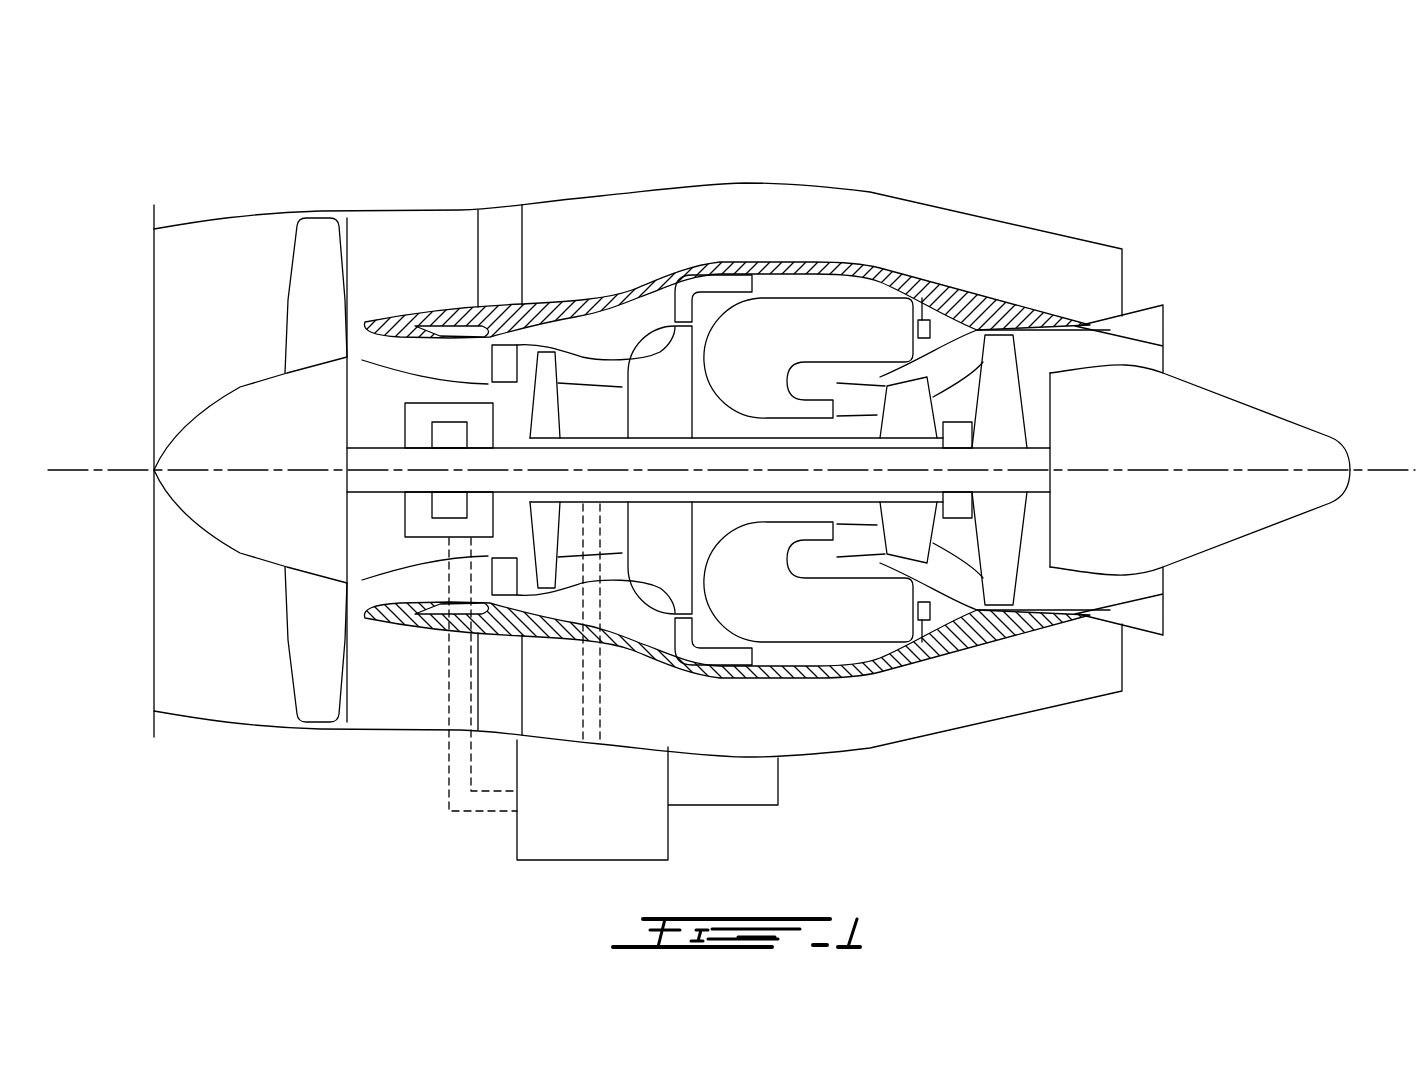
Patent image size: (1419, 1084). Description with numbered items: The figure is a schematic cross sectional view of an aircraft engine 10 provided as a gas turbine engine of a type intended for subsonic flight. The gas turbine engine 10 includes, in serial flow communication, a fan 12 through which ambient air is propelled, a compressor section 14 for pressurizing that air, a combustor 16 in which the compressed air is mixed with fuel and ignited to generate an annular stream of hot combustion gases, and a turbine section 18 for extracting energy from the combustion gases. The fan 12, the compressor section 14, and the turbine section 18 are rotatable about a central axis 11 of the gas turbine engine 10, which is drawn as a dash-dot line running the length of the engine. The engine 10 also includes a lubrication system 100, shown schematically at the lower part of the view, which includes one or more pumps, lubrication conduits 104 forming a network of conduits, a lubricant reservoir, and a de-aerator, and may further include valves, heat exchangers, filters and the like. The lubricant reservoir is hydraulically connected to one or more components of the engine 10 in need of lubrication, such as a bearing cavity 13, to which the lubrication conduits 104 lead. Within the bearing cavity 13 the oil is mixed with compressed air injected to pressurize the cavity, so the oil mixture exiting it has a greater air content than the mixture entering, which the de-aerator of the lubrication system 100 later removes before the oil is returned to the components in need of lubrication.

The aircraft engine 10 is at (1019, 168).
The central axis 11 is at (1392, 468).
The fan 12 is at (312, 633).
The bearing cavity 13 is at (418, 528).
The compressor section 14 is at (580, 365).
The combustor 16 is at (815, 320).
The turbine section 18 is at (955, 542).
The lubrication system 100 is at (470, 833).
The lubrication conduits 104 is at (447, 763).